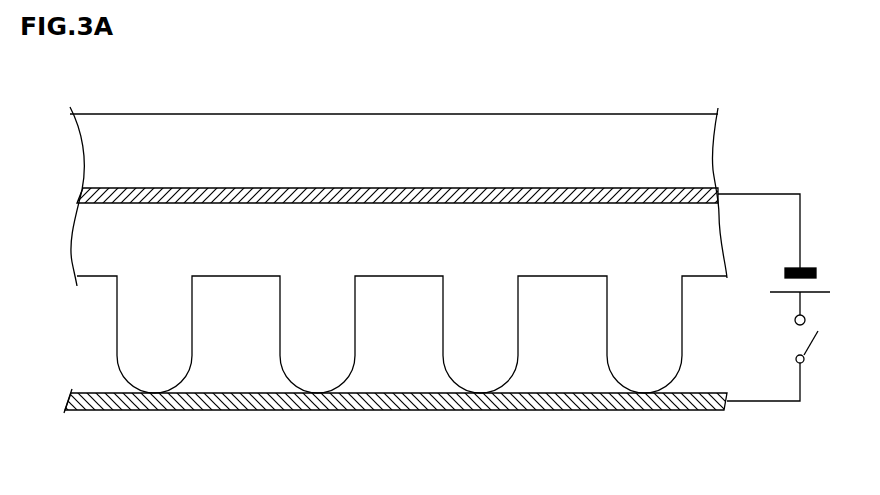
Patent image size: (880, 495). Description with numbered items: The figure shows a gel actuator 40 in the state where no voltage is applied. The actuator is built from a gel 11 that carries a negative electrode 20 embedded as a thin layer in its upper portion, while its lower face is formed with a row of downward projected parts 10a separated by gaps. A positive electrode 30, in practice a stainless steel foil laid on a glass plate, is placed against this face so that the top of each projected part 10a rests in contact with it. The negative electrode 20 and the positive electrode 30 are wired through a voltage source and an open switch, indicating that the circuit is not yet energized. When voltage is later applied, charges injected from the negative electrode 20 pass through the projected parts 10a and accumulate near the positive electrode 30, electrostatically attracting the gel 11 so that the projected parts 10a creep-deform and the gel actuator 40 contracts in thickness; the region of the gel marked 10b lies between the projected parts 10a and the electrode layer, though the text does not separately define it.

The gel actuator 40 is at (623, 80).
The gel 11 is at (155, 128).
The base portion of elastic body 10b is at (286, 141).
The projected part 10a is at (308, 313).
The negative electrode 20 is at (515, 192).
The positive electrode 30 is at (520, 410).